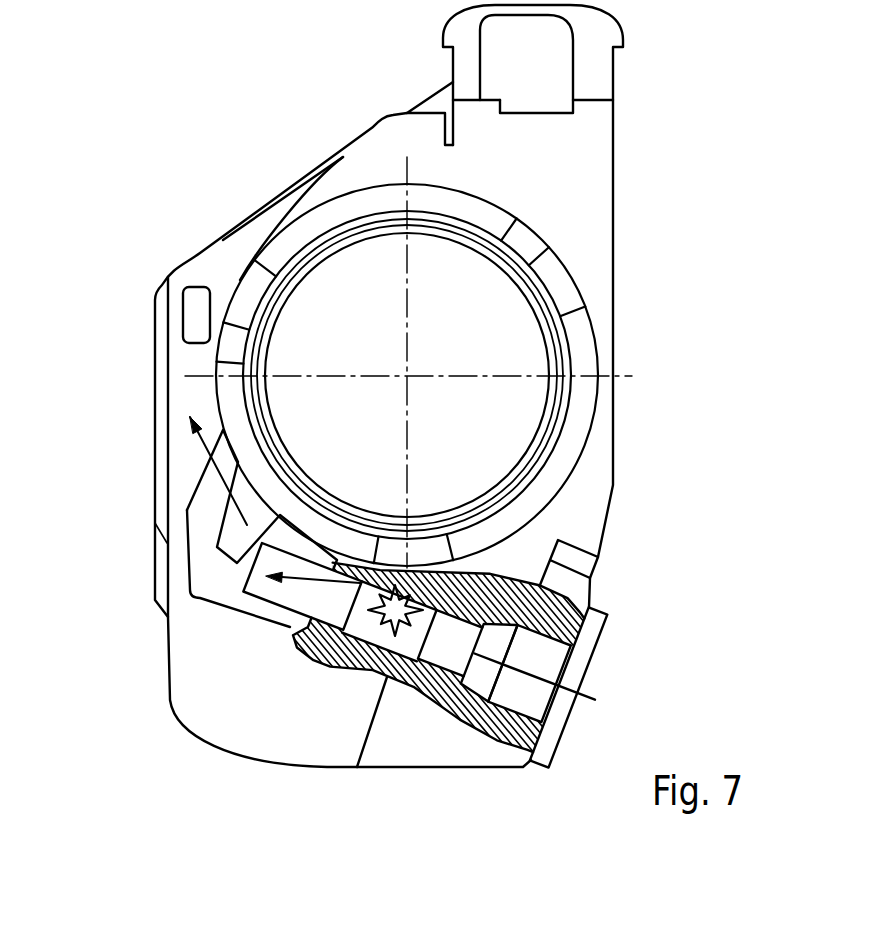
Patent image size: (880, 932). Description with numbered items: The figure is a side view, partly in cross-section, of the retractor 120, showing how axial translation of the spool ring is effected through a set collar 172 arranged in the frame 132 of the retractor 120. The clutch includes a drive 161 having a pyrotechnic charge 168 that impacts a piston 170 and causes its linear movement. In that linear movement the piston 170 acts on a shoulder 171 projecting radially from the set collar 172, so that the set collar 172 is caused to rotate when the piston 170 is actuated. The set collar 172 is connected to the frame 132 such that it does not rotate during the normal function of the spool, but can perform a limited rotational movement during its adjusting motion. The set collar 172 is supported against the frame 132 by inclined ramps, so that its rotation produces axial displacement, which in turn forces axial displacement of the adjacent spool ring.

The retractor 120 is at (197, 147).
The frame 132 is at (588, 217).
The set collar 172 is at (583, 340).
The shoulder 171 is at (237, 540).
The piston 170 is at (280, 597).
The pyrotechnic charge 168 is at (462, 630).
The drive 161 is at (300, 707).